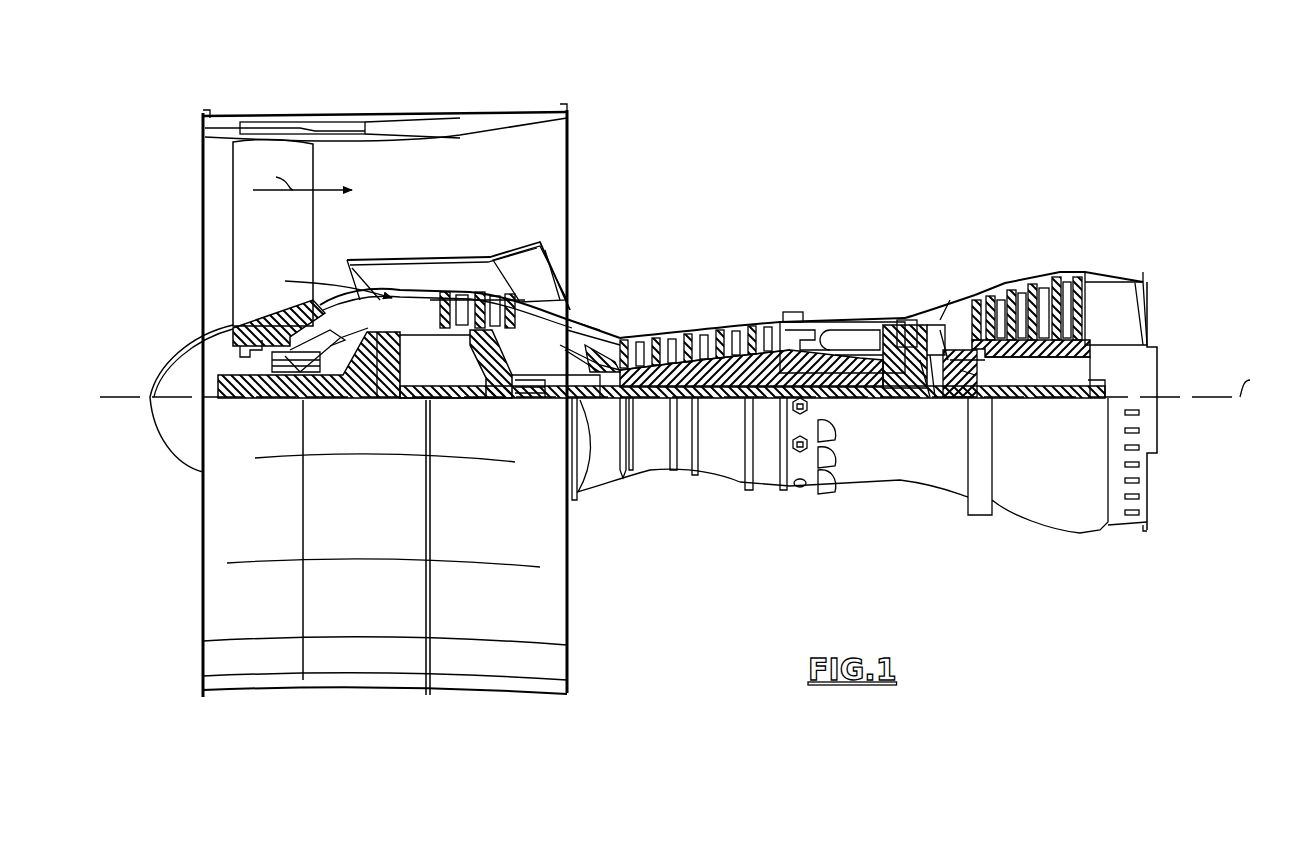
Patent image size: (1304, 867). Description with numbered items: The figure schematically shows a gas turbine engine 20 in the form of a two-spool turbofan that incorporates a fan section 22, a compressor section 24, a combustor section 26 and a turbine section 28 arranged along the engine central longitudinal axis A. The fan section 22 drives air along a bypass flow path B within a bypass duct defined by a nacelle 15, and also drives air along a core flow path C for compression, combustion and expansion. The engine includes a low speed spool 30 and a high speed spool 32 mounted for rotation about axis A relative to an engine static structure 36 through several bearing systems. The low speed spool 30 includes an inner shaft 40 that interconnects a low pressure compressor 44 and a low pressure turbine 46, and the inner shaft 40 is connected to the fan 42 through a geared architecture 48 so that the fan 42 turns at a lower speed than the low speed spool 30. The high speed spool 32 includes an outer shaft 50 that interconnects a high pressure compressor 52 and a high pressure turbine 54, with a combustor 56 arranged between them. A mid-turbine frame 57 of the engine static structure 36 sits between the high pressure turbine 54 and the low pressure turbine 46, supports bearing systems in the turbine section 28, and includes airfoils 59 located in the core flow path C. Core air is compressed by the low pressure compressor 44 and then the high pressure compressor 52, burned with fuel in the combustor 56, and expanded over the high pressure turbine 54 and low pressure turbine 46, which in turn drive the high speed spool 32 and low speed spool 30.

The nacelle 15 is at (385, 118).
The gas turbine engine 20 is at (848, 163).
The fan section 22 is at (312, 105).
The compressor section 24 is at (617, 304).
The combustor section 26 is at (840, 295).
The turbine section 28 is at (990, 254).
The low speed spool 30 is at (724, 405).
The high speed spool 32 is at (770, 325).
The engine static structure 36 is at (765, 482).
The inner shaft 40 is at (594, 400).
The fan 42 is at (273, 232).
The low pressure compressor 44 is at (492, 306).
The low pressure turbine 46 is at (1038, 282).
The geared architecture 48 is at (392, 382).
The outer shaft 50 is at (850, 398).
The high pressure compressor 52 is at (698, 328).
The high pressure turbine 54 is at (905, 312).
The combustor 56 is at (845, 335).
The mid-turbine frame 57 is at (945, 302).
The airfoils 59 is at (985, 366).